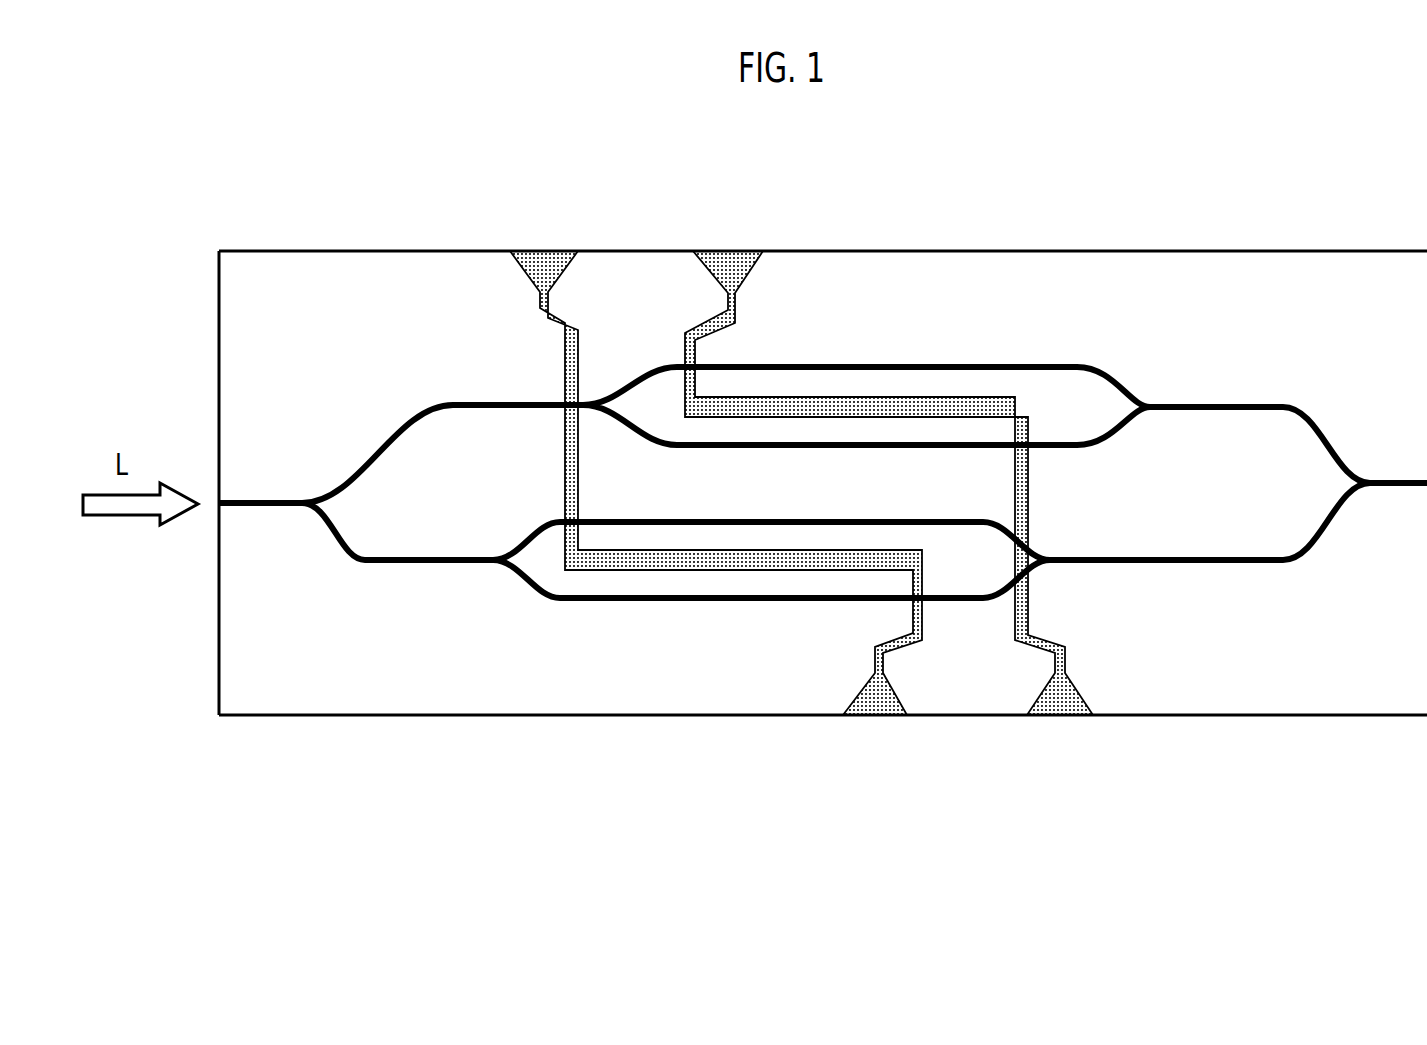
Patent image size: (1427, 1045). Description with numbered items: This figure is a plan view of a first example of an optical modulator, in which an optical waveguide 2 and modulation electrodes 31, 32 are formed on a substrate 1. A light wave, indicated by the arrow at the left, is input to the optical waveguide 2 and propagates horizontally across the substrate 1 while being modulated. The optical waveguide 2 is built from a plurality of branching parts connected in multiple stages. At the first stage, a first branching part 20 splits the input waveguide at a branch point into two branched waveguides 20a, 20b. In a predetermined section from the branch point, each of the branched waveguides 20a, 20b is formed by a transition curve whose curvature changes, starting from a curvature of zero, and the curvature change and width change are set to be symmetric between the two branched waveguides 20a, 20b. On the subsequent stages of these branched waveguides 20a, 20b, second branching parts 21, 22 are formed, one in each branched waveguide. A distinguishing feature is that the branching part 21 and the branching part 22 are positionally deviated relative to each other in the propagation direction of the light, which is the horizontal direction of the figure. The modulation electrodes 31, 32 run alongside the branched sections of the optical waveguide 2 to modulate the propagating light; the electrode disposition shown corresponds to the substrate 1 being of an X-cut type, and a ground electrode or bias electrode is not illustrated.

The substrate 1 is at (413, 715).
The optical waveguide 2 is at (1056, 355).
The first branching part 20 is at (300, 508).
The branched waveguide 20a is at (363, 562).
The branched waveguide 20b is at (427, 403).
The second branching part 21 is at (493, 563).
The second branching part 22 is at (592, 402).
The modulation electrode 31 is at (687, 570).
The modulation electrode 32 is at (890, 397).